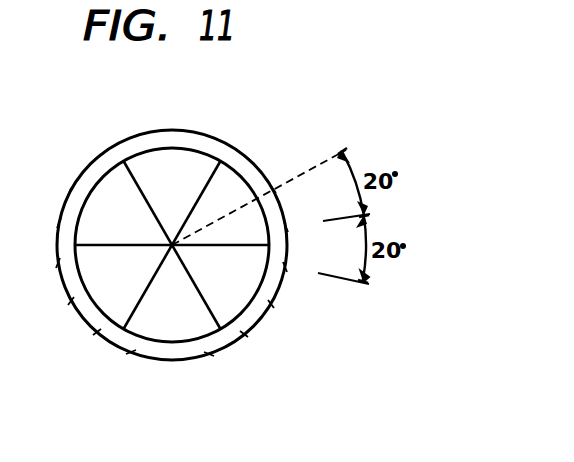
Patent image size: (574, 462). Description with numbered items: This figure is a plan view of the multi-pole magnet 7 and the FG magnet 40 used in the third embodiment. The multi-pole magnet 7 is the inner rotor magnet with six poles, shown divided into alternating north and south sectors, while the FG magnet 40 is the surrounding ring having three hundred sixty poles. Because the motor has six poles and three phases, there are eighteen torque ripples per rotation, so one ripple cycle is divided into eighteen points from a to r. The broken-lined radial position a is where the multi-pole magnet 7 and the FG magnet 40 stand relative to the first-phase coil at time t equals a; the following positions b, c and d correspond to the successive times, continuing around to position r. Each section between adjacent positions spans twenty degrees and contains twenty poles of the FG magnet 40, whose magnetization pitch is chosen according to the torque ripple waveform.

The multi-pole magnet 7 is at (155, 158).
The FG magnet 40 is at (233, 149).
The position r is at (278, 130).
The position a' a is at (303, 168).
The position b' b is at (312, 213).
The position c' c is at (313, 257).
The position d' d is at (298, 300).